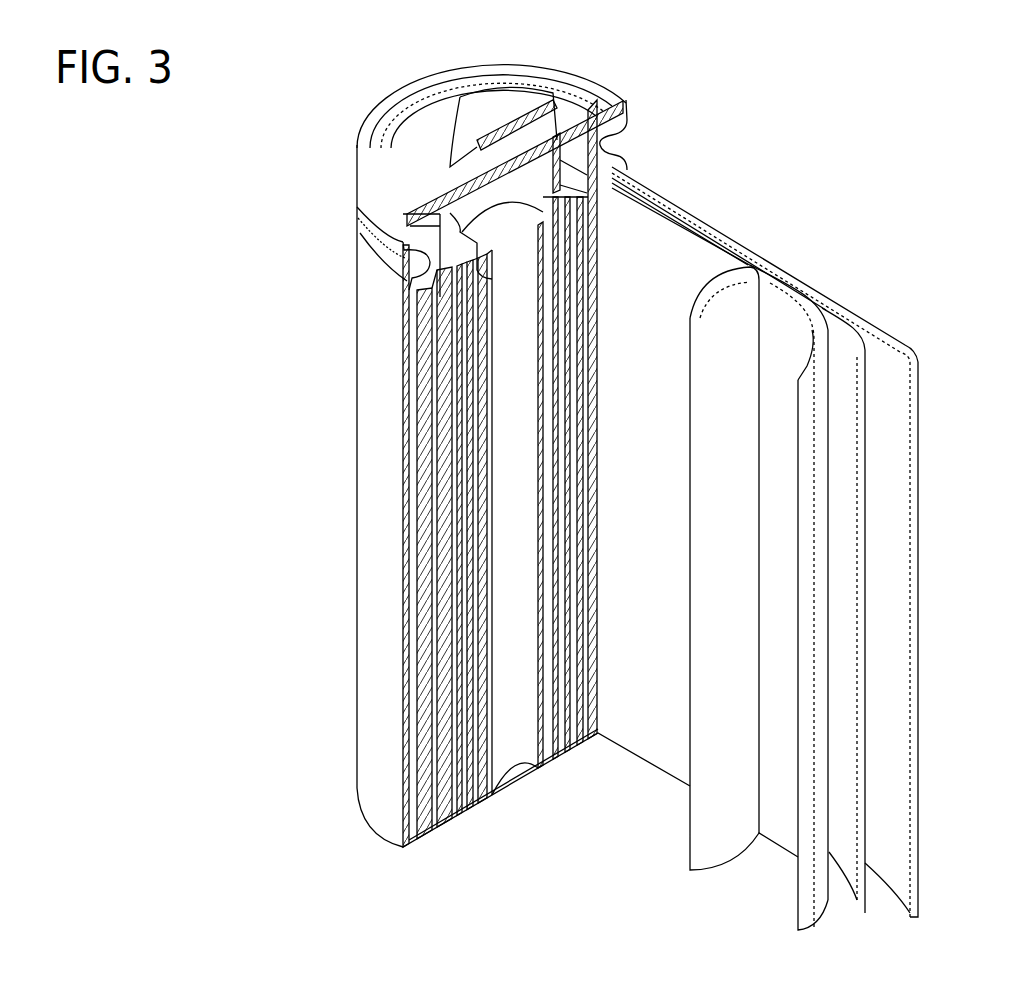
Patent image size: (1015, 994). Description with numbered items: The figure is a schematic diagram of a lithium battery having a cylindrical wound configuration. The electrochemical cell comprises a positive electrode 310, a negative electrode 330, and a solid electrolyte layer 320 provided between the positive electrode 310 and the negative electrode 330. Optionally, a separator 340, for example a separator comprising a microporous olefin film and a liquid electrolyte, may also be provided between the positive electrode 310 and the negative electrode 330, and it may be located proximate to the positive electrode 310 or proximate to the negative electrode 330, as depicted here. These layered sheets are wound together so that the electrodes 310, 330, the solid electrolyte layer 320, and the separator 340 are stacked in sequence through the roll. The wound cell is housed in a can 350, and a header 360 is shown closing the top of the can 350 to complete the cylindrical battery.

The positive electrode 310 is at (697, 238).
The solid electrolyte layer 320 is at (785, 287).
The negative electrode 330 is at (850, 313).
The separator 340 is at (908, 338).
The can 350 is at (368, 500).
The header 360 is at (488, 108).